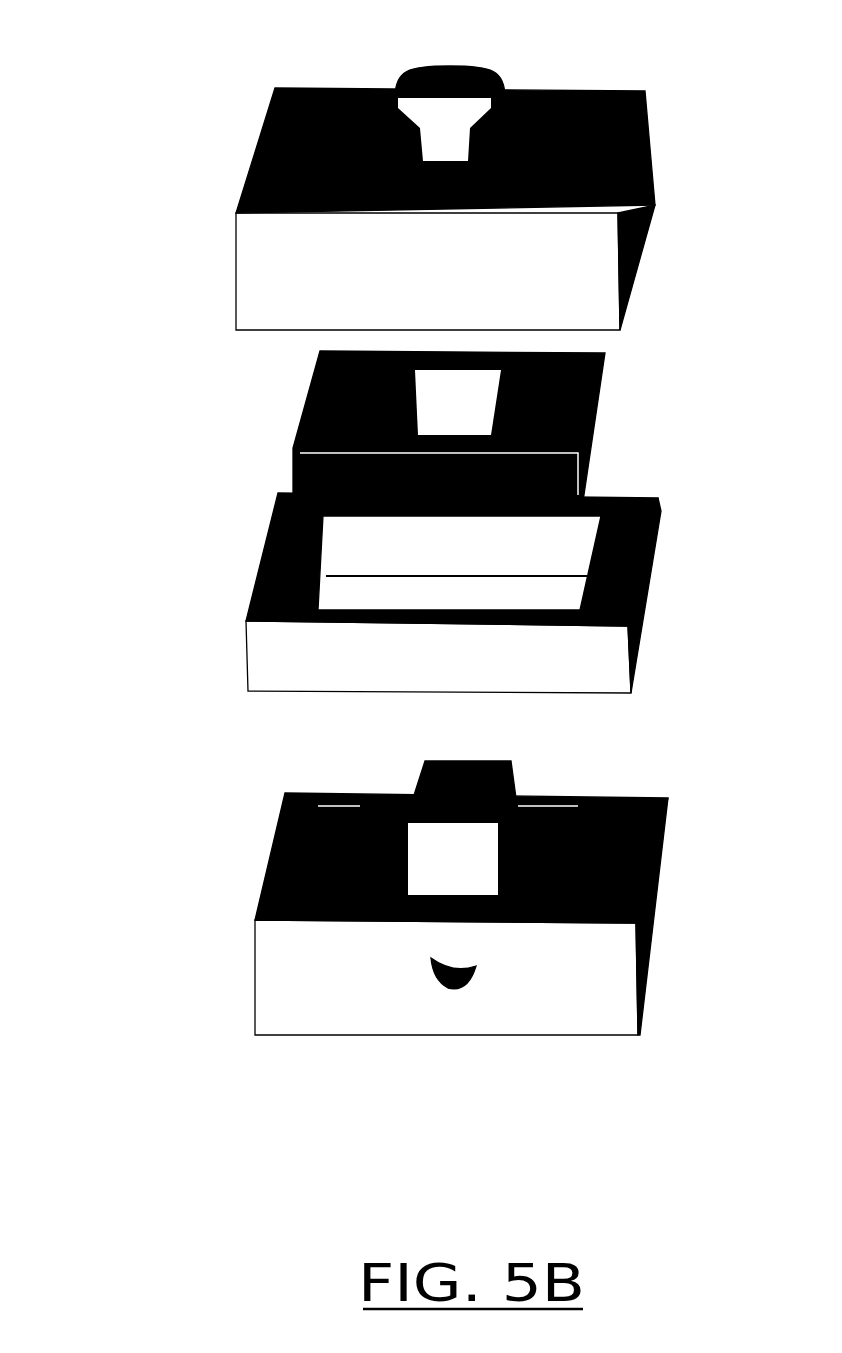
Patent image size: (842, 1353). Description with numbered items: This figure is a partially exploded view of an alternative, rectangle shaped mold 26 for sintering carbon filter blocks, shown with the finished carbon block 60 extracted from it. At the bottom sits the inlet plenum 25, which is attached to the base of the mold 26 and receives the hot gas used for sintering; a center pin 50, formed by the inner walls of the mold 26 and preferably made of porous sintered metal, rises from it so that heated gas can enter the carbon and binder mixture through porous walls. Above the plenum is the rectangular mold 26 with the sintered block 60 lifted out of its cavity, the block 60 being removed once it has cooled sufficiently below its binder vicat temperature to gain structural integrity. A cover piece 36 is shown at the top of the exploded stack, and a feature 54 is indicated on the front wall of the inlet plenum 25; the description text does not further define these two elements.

The cover block 36 is at (257, 103).
The sintered block 60 is at (595, 388).
The mold 26 is at (250, 637).
The inlet plenum 25 is at (277, 802).
The center pin 50 is at (507, 763).
The notch 54 is at (270, 993).